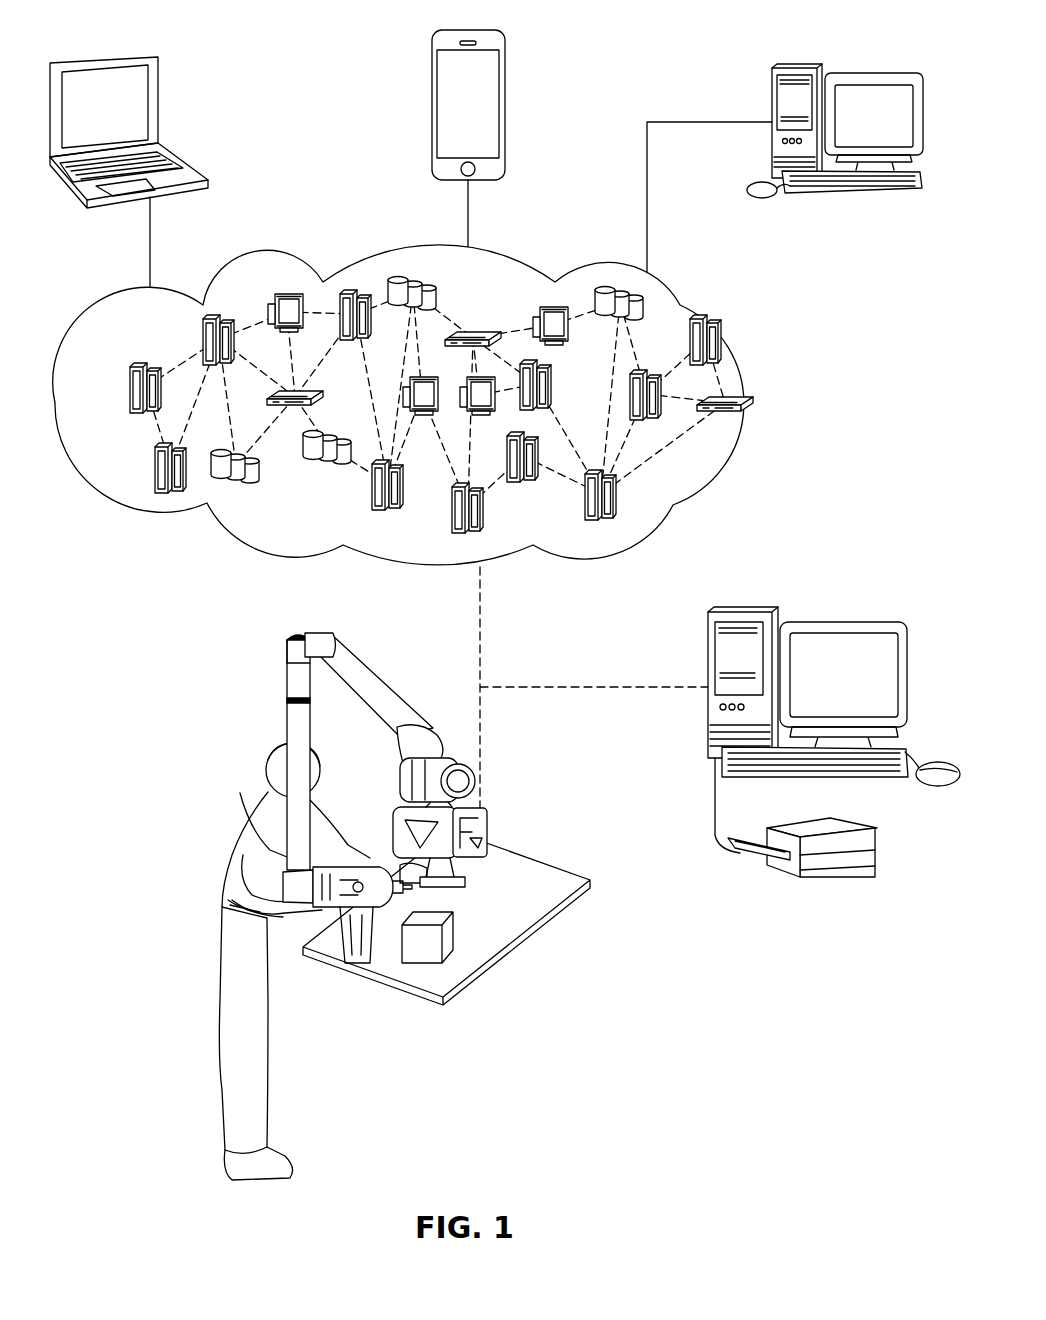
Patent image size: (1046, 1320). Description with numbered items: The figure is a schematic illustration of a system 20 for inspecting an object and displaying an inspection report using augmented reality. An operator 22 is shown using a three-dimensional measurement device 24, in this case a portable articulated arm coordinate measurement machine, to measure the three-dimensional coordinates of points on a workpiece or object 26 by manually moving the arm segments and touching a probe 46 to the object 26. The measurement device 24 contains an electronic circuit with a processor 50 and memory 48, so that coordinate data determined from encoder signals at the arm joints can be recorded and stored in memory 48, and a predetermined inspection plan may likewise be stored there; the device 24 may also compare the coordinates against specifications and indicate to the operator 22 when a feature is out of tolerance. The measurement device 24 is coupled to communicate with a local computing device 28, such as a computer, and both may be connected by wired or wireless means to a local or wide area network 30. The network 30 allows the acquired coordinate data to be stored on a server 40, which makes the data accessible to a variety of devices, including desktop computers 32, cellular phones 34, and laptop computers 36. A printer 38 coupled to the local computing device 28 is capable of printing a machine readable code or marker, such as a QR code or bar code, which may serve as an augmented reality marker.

The system 20 is at (582, 1033).
The operator 22 is at (222, 1010).
The 3D measurement device 24 is at (285, 680).
The object 26 is at (413, 963).
The local computing device 28 is at (740, 612).
The network 30 is at (399, 419).
The desktop computer 32 is at (793, 68).
The cellular phone 34 is at (468, 28).
The laptop computer 36 is at (103, 57).
The printer 38 is at (870, 855).
The server 40 is at (597, 520).
The probe 46 is at (403, 898).
The memory 48 is at (485, 827).
The processor 50 is at (468, 870).